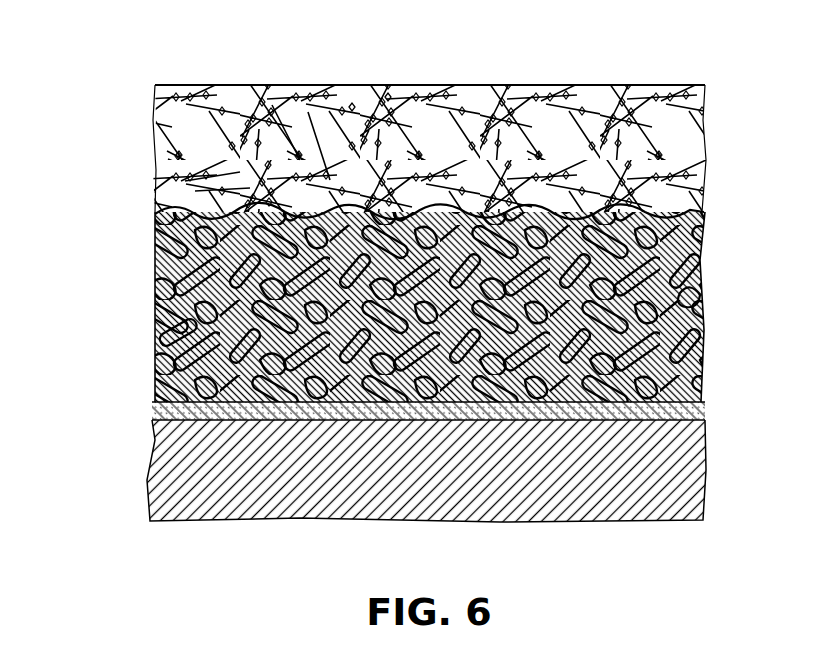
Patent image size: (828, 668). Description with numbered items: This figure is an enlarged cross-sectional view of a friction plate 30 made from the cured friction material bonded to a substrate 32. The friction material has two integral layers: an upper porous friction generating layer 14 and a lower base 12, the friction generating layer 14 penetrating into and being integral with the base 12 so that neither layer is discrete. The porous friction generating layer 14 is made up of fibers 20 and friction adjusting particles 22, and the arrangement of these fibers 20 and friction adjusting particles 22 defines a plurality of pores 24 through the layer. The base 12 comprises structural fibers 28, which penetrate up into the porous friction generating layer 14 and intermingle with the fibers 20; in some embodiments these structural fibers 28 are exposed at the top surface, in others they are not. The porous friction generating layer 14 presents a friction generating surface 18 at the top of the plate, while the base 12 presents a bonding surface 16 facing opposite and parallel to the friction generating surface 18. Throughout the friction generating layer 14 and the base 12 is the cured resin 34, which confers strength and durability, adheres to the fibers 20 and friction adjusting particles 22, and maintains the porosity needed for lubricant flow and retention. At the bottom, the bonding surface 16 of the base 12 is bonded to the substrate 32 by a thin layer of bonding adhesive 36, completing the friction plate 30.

The friction plate 30 is at (85, 145).
The porous friction generating layer 14 is at (713, 85).
The base 12 is at (713, 222).
The friction generating surface 18 is at (598, 78).
The bonding surface 16 is at (186, 408).
The fibers 20 is at (308, 112).
The friction adjusting particles 22 is at (388, 95).
The pores 24 is at (195, 191).
The structural fibers 28 is at (156, 347).
The cured resin 34 is at (700, 295).
The bonding adhesive 36 is at (672, 405).
The substrate 32 is at (668, 456).